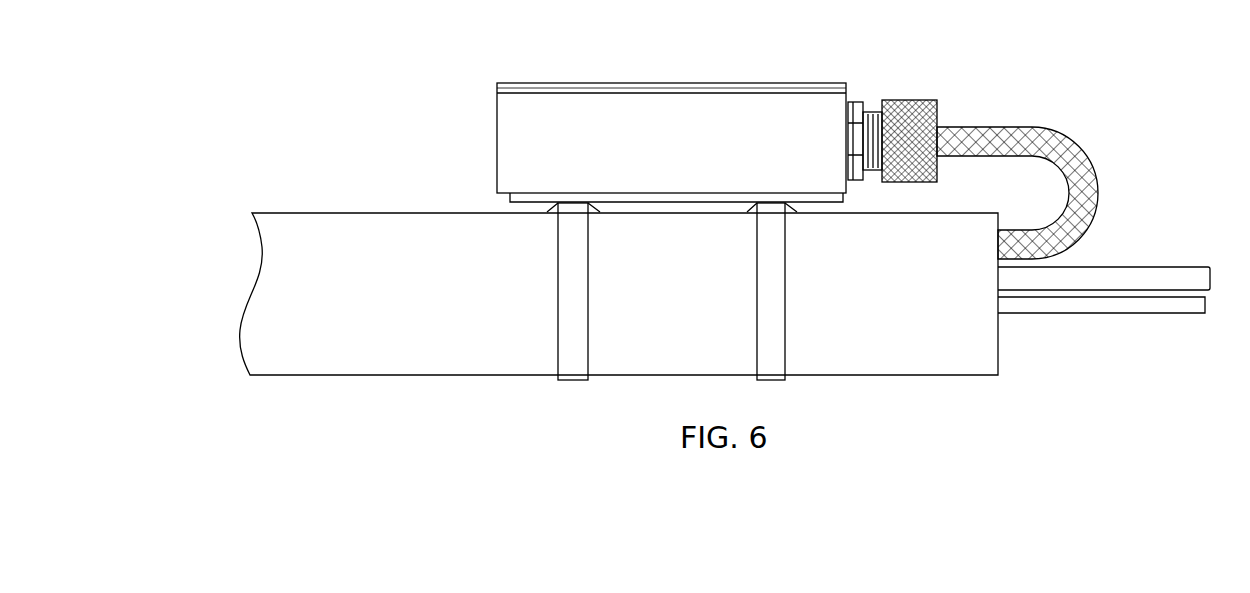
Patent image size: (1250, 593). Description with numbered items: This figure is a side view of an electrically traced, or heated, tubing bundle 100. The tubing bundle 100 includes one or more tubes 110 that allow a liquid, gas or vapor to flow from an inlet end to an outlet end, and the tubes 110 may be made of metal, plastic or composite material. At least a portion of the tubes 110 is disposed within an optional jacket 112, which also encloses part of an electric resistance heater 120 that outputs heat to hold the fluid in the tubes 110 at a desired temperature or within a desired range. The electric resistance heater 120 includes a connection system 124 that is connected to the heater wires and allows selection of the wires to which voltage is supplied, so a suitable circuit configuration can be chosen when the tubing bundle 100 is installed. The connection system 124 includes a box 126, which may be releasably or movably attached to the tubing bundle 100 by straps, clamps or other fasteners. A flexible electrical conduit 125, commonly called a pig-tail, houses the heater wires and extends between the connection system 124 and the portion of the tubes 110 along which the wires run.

The tubing bundle 100 is at (418, 386).
The tubes 110 is at (1187, 270).
The jacket 112 is at (270, 218).
The electric resistance heater 120 is at (847, 90).
The connection system 124 is at (533, 117).
The flexible electrical conduit 125 is at (1058, 127).
The box 126 is at (640, 130).